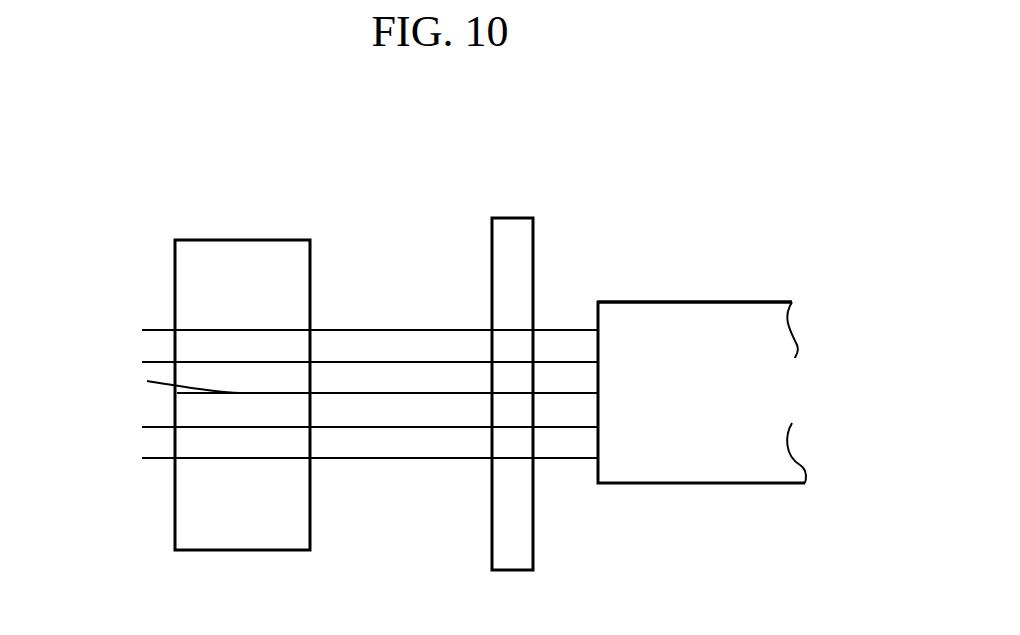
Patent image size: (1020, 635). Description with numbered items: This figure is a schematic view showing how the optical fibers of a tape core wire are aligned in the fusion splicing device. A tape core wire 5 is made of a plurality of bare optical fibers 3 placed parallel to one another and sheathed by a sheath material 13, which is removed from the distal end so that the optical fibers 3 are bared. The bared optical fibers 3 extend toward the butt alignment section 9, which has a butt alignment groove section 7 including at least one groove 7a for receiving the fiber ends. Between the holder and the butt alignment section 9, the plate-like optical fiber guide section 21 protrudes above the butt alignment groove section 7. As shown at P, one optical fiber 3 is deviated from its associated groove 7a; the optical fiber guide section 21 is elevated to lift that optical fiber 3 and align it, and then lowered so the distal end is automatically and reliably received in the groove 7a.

The butt alignment section 9 is at (272, 253).
The optical fiber guide section 21 is at (513, 238).
The sheath material 13 is at (682, 320).
The tape core wire 5 is at (747, 300).
The optical fiber 3 is at (422, 328).
The groove 7a is at (190, 393).
The deviated position P is at (150, 376).
The butt alignment groove section 7 is at (157, 468).